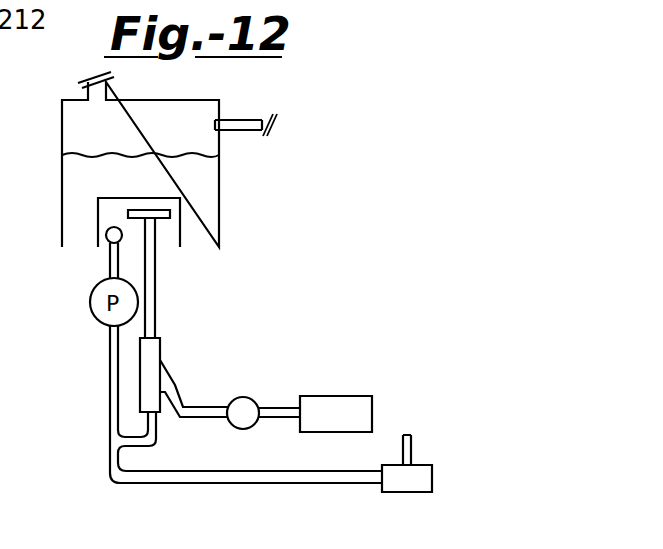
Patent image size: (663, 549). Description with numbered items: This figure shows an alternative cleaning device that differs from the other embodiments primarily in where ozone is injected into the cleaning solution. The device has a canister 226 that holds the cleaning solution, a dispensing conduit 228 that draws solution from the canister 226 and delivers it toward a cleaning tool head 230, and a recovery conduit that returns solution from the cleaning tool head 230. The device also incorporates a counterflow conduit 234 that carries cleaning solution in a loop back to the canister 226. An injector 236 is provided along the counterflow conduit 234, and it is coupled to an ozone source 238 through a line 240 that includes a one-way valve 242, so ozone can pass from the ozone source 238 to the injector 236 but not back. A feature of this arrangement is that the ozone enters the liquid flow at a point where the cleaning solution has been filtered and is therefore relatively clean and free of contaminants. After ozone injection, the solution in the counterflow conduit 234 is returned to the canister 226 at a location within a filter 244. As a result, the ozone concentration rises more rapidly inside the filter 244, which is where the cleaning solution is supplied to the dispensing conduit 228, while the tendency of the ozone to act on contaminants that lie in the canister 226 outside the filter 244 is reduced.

The canister 226 is at (220, 208).
The dispensing conduit 228 is at (110, 262).
The cleaning tool head 230 is at (432, 476).
The counterflow conduit 234 is at (145, 443).
The injector 236 is at (163, 360).
The ozone source 238 is at (372, 413).
The line 240 is at (282, 408).
The one-way valve 242 is at (230, 398).
The filter 244 is at (98, 213).